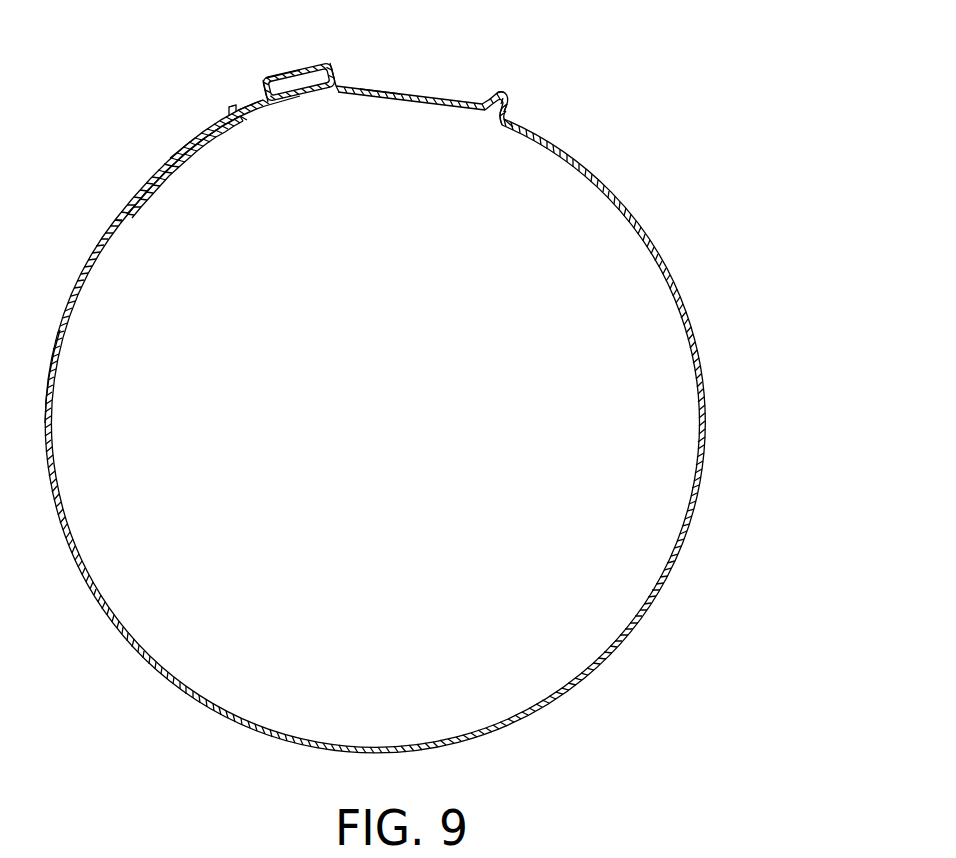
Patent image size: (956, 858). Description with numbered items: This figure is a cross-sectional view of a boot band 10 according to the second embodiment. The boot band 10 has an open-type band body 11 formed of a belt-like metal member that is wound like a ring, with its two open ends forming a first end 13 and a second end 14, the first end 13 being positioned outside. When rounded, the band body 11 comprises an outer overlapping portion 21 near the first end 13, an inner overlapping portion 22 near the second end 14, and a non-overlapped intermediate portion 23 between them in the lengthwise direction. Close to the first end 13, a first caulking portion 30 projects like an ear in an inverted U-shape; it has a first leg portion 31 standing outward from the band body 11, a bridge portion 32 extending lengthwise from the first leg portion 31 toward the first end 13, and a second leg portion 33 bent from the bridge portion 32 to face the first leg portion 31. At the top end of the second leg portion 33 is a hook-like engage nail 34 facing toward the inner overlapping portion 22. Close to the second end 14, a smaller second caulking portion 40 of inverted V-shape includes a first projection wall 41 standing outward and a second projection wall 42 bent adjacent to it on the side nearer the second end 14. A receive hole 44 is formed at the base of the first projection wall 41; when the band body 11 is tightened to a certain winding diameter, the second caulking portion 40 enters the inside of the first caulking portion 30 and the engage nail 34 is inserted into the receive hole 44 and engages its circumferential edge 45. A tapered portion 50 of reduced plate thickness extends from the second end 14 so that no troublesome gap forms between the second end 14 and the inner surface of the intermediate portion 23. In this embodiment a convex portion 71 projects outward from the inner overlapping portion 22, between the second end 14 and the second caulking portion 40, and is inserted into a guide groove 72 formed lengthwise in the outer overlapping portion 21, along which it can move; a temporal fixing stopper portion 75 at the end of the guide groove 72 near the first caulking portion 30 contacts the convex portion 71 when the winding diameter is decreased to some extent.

The boot band 10 is at (391, 376).
The band body 11 is at (93, 615).
The first end 13 is at (345, 88).
The second end 14 is at (137, 200).
The outer overlapping portion 21 is at (252, 103).
The inner overlapping portion 22 is at (272, 107).
The intermediate portion 23 is at (58, 330).
The first caulking portion 30 is at (320, 53).
The first leg portion 31 is at (267, 97).
The bridge portion 32 is at (287, 72).
The second leg portion 33 is at (337, 80).
The engage nail 34 is at (382, 90).
The second caulking portion 40 is at (513, 85).
The first projection wall 41 is at (512, 107).
The second projection wall 42 is at (500, 90).
The receive hole 44 is at (495, 120).
The circumferential edge 45 is at (508, 115).
The tapered portion 50 is at (182, 160).
The convex portion 71 is at (230, 116).
The guide groove 72 is at (182, 145).
The temporal fixing stopper portion 75 is at (235, 103).